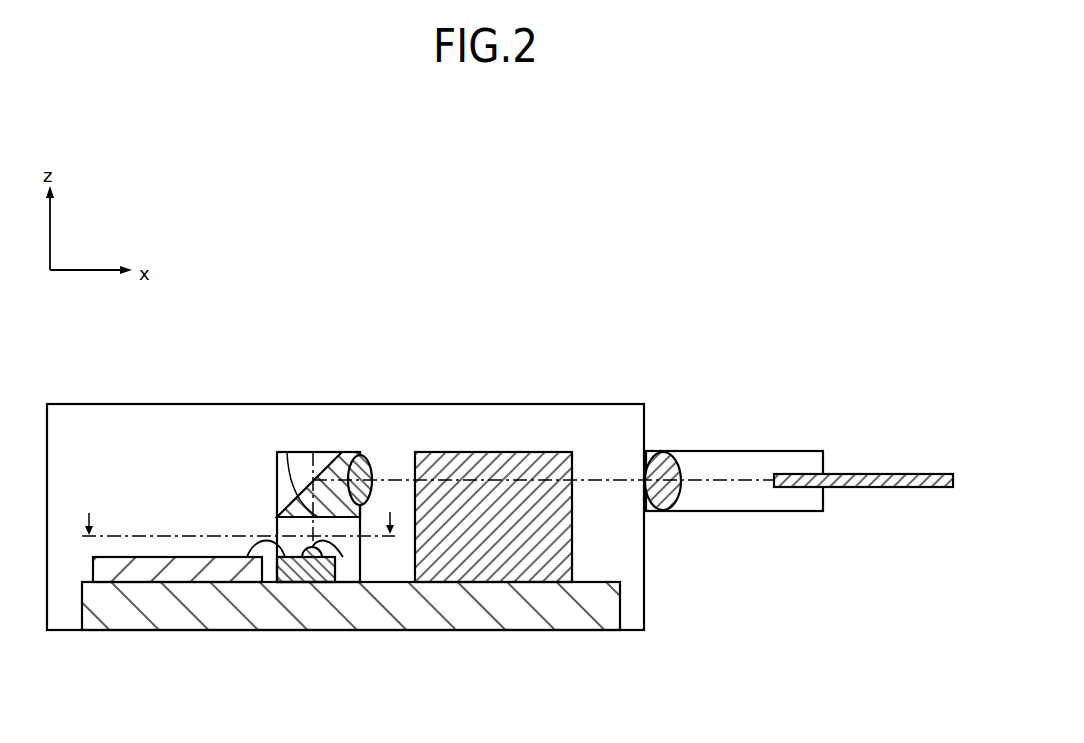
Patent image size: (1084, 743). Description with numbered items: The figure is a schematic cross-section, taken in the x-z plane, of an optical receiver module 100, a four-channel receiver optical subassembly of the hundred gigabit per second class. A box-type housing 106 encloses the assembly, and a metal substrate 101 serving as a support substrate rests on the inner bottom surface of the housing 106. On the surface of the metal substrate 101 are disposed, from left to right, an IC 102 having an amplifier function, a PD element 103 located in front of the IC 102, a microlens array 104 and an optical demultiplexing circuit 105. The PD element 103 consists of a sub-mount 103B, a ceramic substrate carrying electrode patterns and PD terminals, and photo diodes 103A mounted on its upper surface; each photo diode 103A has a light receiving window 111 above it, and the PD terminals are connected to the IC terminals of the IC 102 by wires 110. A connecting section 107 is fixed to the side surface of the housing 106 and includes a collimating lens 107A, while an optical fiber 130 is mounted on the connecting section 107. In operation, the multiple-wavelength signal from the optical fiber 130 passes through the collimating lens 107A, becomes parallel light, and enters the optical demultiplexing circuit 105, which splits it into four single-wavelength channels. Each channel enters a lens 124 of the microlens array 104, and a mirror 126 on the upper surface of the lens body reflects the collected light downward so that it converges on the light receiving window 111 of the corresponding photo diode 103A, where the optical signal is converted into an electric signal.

The optical receiver module 100 is at (445, 298).
The metal substrate 101 is at (588, 625).
The IC 102 is at (162, 577).
The PD element 103 is at (331, 642).
The photo diode 103A is at (335, 548).
The sub-mount 103B is at (290, 582).
The microlens array 104 is at (318, 452).
The optical demultiplexing circuit 105 is at (467, 458).
The box-type housing 106 is at (645, 557).
The connecting section 107 is at (778, 460).
The collimating lens 107A is at (660, 462).
The wire 110 is at (247, 552).
The light receiving window 111 is at (298, 557).
The lens 124 is at (377, 458).
The mirror 126 is at (288, 451).
The optical fiber 130 is at (892, 480).